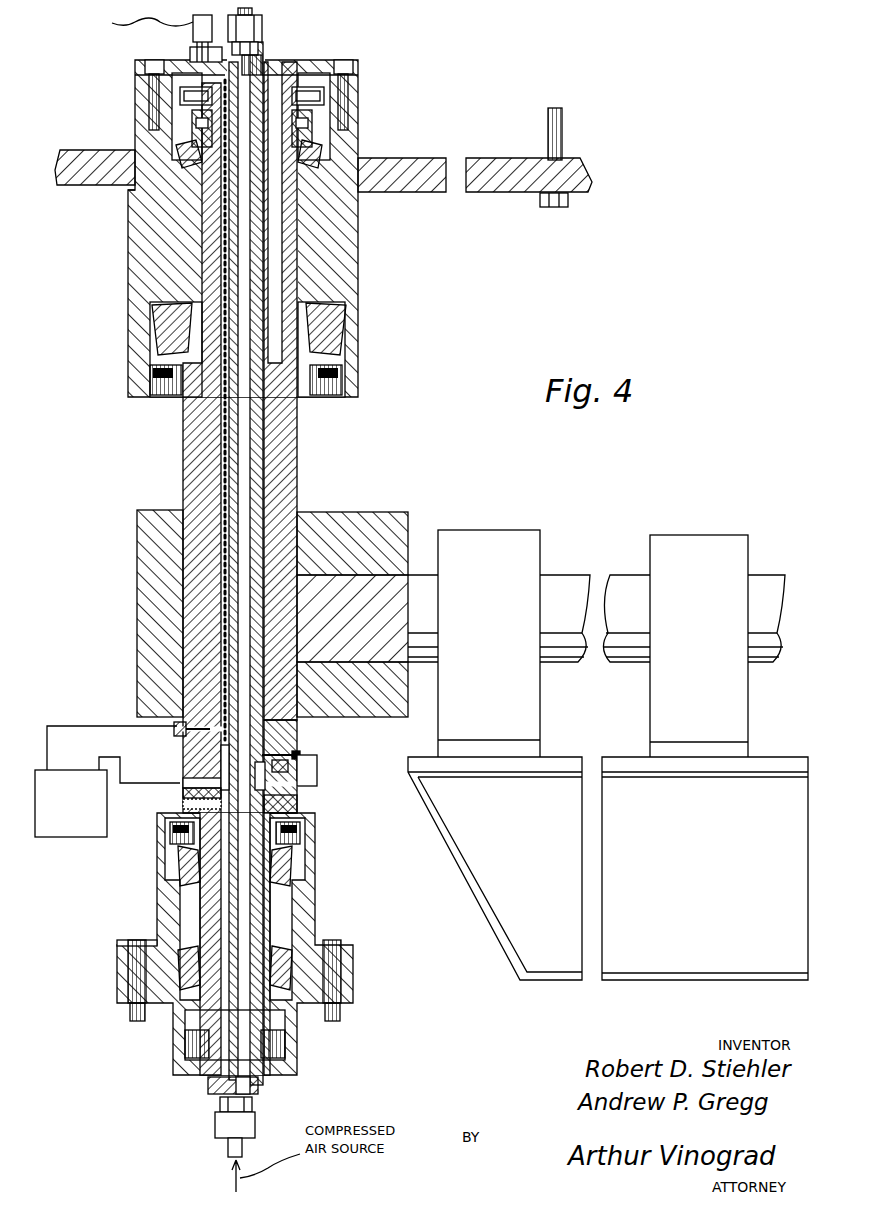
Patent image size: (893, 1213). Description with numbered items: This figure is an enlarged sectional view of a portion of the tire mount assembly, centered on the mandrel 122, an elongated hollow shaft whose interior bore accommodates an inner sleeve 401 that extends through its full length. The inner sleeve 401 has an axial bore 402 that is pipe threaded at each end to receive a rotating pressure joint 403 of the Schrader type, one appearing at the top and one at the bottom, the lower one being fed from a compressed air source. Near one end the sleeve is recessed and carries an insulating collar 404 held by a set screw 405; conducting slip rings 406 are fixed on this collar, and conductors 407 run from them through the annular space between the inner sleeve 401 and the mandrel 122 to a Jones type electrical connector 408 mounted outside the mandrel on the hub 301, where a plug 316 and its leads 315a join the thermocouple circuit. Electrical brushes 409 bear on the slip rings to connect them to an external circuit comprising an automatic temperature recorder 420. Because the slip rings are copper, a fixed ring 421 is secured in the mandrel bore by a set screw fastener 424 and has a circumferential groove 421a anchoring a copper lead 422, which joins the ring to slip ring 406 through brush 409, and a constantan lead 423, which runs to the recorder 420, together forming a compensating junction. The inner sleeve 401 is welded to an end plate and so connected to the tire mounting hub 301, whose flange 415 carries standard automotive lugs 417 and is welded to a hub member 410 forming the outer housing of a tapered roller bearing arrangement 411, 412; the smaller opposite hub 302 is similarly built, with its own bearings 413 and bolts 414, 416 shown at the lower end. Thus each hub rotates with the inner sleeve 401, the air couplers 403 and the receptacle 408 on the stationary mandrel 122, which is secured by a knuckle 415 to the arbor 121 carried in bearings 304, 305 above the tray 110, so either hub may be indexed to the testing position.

The tray 110 is at (438, 800).
The arbor 121 is at (562, 575).
The mandrel 122 is at (300, 446).
The tire mounting hub 301 is at (422, 139).
The opposite hub 302 is at (159, 1030).
The bearing 304 is at (490, 530).
The bearing 305 is at (702, 535).
The electrical lead 315a is at (130, 20).
The plug 316 is at (195, 22).
The inner sleeve 401 is at (258, 470).
The axial bore 402 is at (263, 76).
The rotating pressure joint 403 is at (265, 23).
The insulating collar 404 is at (213, 780).
The set screw 405 is at (278, 780).
The slip ring 406 is at (292, 735).
The conductors 407 is at (220, 482).
The electrical connector 408 is at (185, 52).
The electrical brush 409 is at (302, 752).
The hub member 410 is at (362, 236).
The tapered roller bearing 411 is at (152, 318).
The tapered roller bearing 412 is at (183, 166).
The bearing 413 is at (170, 864).
The flange plate 414 is at (140, 936).
The flange 415 is at (420, 195).
The bolt 416 is at (352, 988).
The lug 417 is at (562, 125).
The automatic temperature recorder 420 is at (46, 845).
The fixed ring 421 is at (322, 62).
The circumferential groove 421a is at (172, 842).
The copper lead 422 is at (320, 776).
The constantan lead 423 is at (152, 785).
The set screw fastener 424 is at (183, 803).